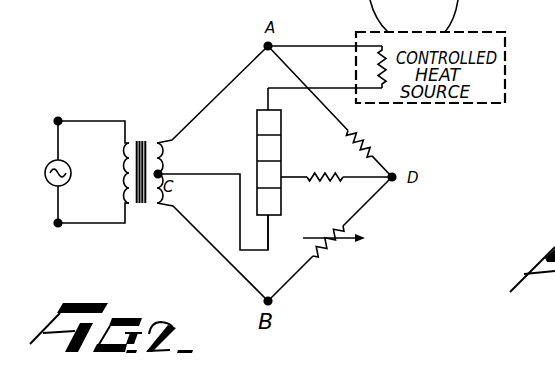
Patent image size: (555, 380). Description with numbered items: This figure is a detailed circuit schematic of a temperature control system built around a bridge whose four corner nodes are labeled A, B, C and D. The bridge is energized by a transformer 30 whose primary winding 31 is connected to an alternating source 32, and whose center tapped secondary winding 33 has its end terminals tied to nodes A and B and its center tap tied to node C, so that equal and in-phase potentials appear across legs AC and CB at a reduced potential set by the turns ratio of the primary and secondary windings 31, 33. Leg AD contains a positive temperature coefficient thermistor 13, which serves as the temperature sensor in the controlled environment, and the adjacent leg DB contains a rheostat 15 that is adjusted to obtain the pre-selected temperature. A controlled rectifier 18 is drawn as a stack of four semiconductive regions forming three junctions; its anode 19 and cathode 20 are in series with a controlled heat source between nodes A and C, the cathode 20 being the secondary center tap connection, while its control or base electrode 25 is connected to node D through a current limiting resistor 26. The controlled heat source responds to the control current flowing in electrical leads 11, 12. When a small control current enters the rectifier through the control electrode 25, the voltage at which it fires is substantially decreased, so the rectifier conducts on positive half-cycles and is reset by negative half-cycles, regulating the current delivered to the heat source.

The electrical lead 11 is at (318, 45).
The electrical lead 12 is at (333, 87).
The positive temperature coefficient thermistor 13 is at (354, 133).
The rheostat 15 is at (328, 245).
The controlled rectifier 18 is at (283, 150).
The anode 19 is at (267, 104).
The cathode 20 is at (268, 232).
The control electrode 25 is at (299, 177).
The current limiting resistor 26 is at (322, 180).
The transformer 30 is at (135, 142).
The primary winding 31 is at (120, 190).
The alternating source 32 is at (47, 160).
The center tapped secondary winding 33 is at (143, 144).